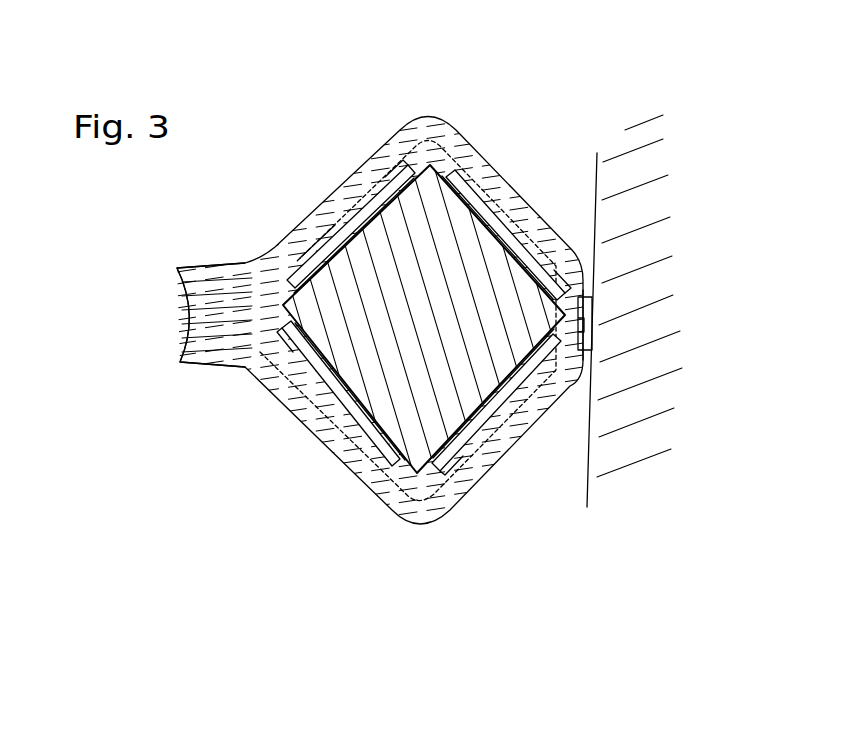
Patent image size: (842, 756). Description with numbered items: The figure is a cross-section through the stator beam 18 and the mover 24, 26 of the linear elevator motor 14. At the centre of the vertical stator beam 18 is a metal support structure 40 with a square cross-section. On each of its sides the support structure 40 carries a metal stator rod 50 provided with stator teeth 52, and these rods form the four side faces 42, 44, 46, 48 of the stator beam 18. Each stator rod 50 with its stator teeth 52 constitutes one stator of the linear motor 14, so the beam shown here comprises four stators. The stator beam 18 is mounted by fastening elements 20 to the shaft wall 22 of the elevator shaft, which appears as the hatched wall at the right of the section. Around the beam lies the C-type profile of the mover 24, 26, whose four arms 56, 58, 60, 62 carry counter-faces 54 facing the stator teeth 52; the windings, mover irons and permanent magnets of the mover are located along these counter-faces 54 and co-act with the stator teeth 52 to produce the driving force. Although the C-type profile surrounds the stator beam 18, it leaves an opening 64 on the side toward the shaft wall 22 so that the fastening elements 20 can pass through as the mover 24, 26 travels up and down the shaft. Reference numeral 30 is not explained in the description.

The linear elevator motor 14 is at (220, 468).
The stator beam 18 is at (372, 200).
The fastening elements 20 is at (570, 323).
The shaft wall 22 is at (630, 183).
The mover 24 is at (187, 255).
The mover 26 is at (187, 255).
The bracket portion 30 is at (652, 0).
The support structure 40 is at (428, 228).
The side face 42 is at (330, 257).
The side face 44 is at (447, 172).
The side face 46 is at (433, 453).
The side face 48 is at (405, 430).
The stator rod 50 is at (507, 257).
The stator teeth 52 is at (432, 275).
The counter-faces 54 is at (352, 222).
The arm 56 is at (318, 220).
The arm 58 is at (535, 215).
The arm 60 is at (477, 460).
The arm 62 is at (333, 435).
The opening 64 is at (583, 288).